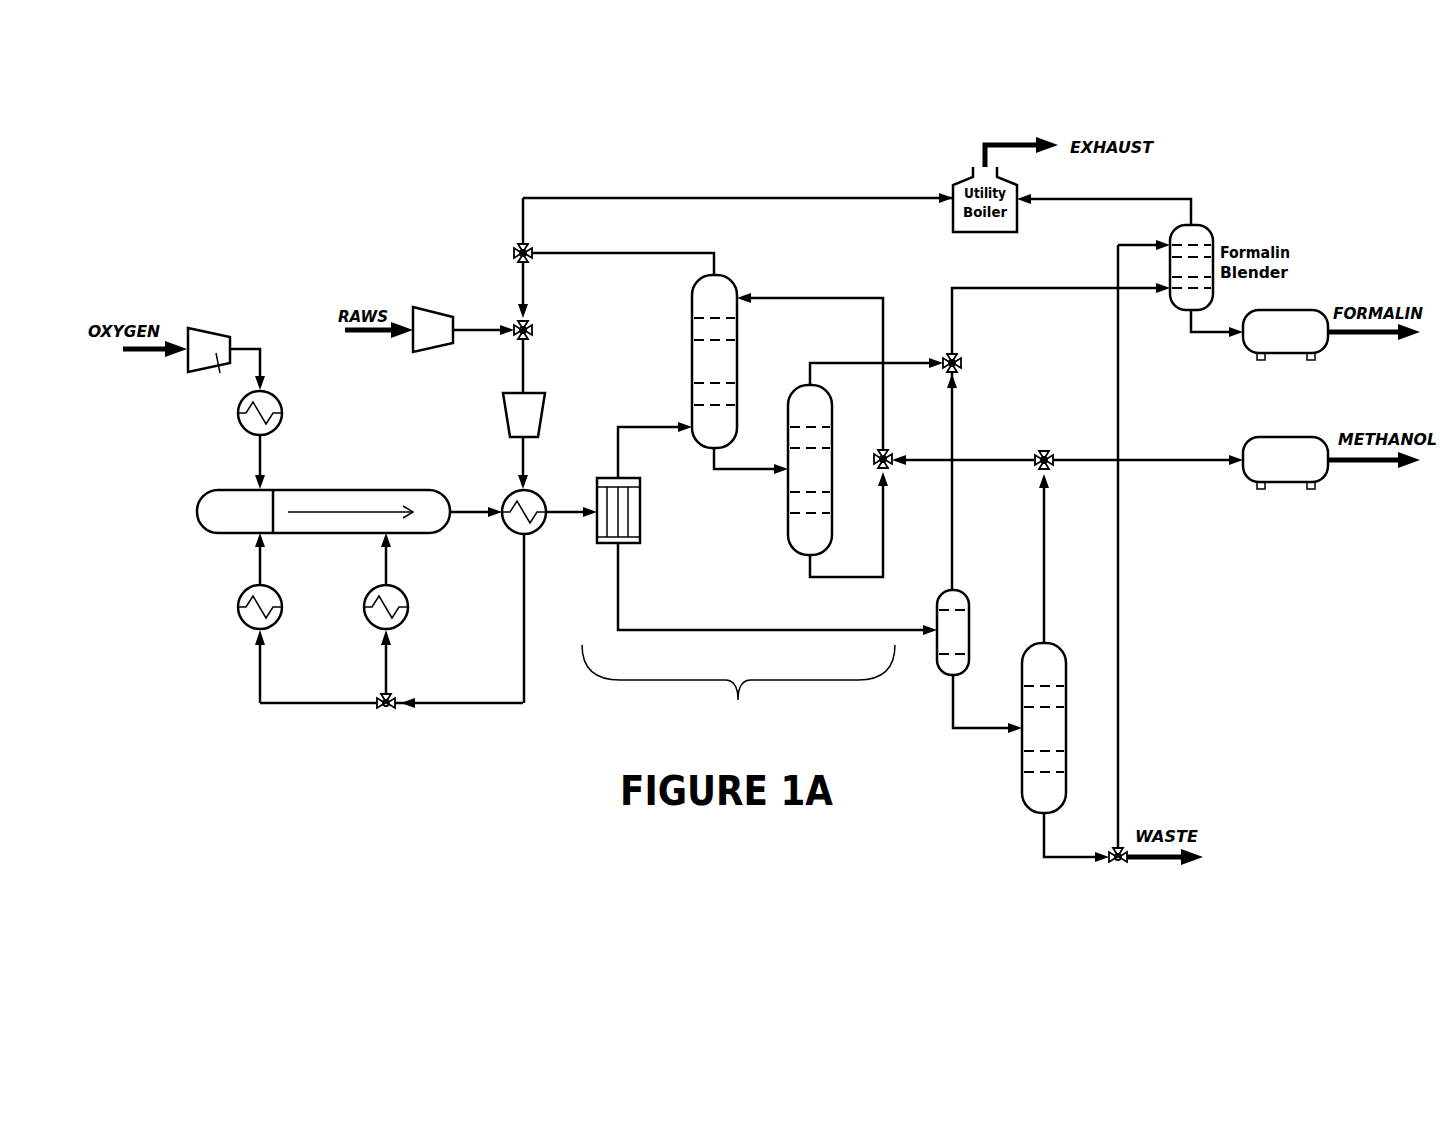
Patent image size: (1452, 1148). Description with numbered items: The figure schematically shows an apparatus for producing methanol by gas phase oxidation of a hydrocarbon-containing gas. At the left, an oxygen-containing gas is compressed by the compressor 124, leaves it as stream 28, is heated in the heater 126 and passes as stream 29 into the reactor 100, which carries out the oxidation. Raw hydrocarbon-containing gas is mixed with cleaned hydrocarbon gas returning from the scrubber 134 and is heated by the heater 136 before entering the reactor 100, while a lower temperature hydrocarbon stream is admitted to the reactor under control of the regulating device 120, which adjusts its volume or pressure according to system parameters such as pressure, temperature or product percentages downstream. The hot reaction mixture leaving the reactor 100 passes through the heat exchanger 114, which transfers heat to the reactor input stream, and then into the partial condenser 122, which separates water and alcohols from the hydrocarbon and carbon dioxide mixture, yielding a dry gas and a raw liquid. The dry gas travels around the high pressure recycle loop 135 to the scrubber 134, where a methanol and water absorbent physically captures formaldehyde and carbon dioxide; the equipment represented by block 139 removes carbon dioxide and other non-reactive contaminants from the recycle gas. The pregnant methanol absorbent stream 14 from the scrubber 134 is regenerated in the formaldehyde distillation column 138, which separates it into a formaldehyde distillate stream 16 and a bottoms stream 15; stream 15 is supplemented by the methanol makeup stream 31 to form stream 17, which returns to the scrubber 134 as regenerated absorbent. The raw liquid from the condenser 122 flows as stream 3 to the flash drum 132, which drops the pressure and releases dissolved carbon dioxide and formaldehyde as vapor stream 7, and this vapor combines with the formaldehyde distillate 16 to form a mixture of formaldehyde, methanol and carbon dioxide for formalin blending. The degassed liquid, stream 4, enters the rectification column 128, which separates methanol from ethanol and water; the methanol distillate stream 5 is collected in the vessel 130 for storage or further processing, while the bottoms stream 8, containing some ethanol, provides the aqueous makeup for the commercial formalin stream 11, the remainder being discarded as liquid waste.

The compressor 124 is at (208, 361).
The compressed oxygen stream 28 is at (260, 366).
The heater 126 is at (272, 405).
The heated oxygen stream 29 is at (270, 462).
The reactor 100 is at (360, 496).
The heater 136 is at (246, 595).
The regulating device 120 is at (391, 716).
The heat exchanger 114 is at (498, 596).
The partial condenser 122 is at (640, 530).
The hydrocarbon gas recycle loop 135 is at (642, 251).
The scrubber 134 is at (728, 350).
The pregnant methanol absorbent stream 14 is at (760, 470).
The regenerated methanol absorbent stream 17 is at (815, 292).
The formaldehyde distillate stream 16 is at (862, 361).
The formaldehyde distillation column 138 is at (829, 486).
The bottoms stream 15 is at (833, 584).
The condensate stream 3 is at (777, 589).
The flash drum vapor stream 7 is at (955, 536).
The methanol makeup stream 31 is at (956, 433).
The flash drum 132 is at (960, 625).
The rectification column feed stream 4 is at (987, 704).
The rectification column 128 is at (1059, 728).
The distillate stream 5 is at (1047, 547).
The bottoms stream 8 is at (1048, 858).
The commercial formalin stream 11 is at (1213, 332).
The vessel 130 is at (1190, 469).
The separation equipment 139 is at (738, 690).